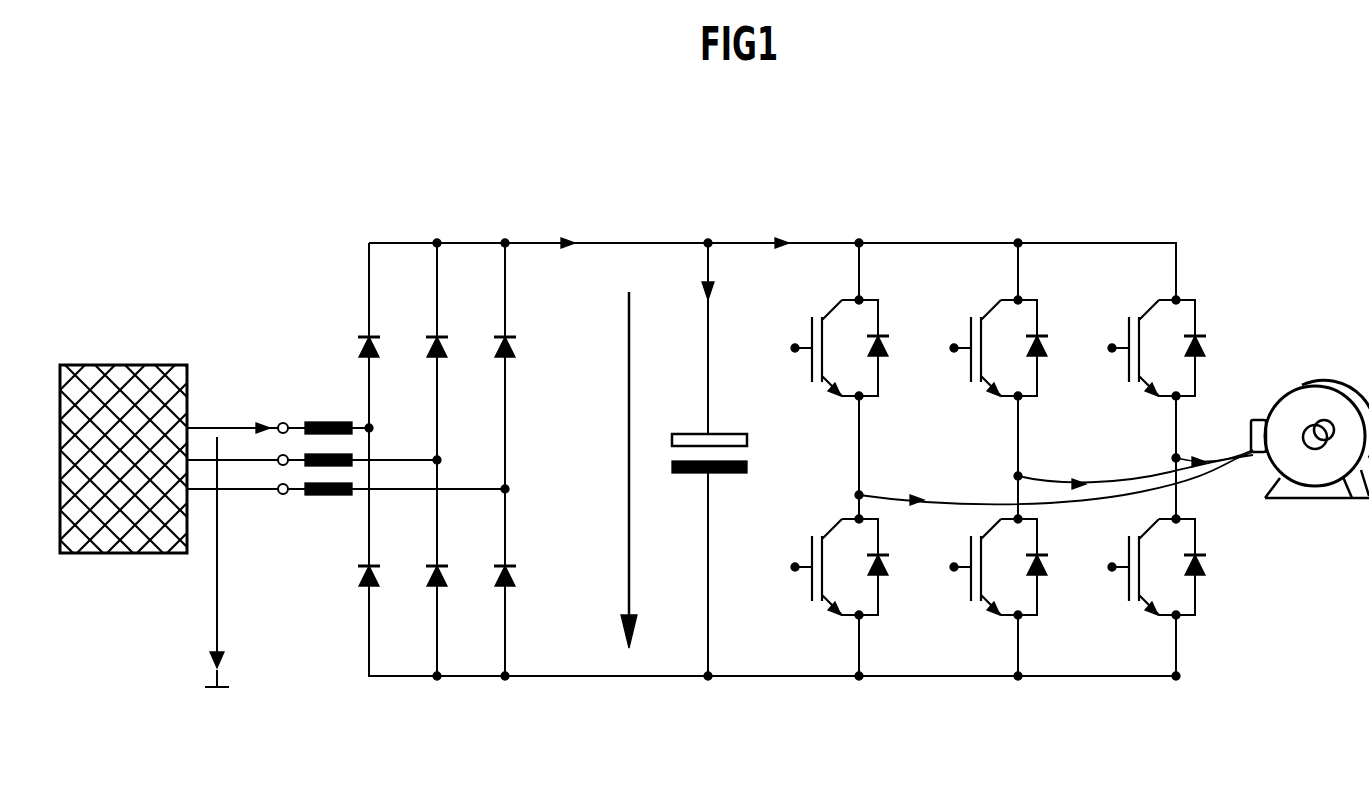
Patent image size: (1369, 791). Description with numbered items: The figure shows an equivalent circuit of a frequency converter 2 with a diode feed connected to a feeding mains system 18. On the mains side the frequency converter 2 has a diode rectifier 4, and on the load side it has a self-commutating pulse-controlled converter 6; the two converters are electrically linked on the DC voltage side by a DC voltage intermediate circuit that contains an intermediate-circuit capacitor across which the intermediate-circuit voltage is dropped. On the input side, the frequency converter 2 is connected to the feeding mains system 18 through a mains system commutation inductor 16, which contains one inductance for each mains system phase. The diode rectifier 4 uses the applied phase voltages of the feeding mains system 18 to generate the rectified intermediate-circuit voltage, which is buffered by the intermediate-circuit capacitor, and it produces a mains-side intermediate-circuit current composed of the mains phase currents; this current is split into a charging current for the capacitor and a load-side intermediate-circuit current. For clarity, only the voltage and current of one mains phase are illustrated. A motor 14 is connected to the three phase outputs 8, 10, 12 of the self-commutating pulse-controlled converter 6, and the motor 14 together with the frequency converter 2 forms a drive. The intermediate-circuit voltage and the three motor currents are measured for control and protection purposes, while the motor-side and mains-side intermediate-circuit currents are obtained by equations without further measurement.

The frequency converter 2 is at (774, 489).
The diode rectifier 4 is at (434, 461).
The self-commutating pulse-controlled converter 6 is at (998, 457).
The phase output 8 is at (859, 495).
The phase output 10 is at (1018, 476).
The phase output 12 is at (1176, 458).
The motor 14 is at (1335, 386).
The mains system commutation inductor 16 is at (330, 497).
The feeding mains system 18 is at (122, 365).